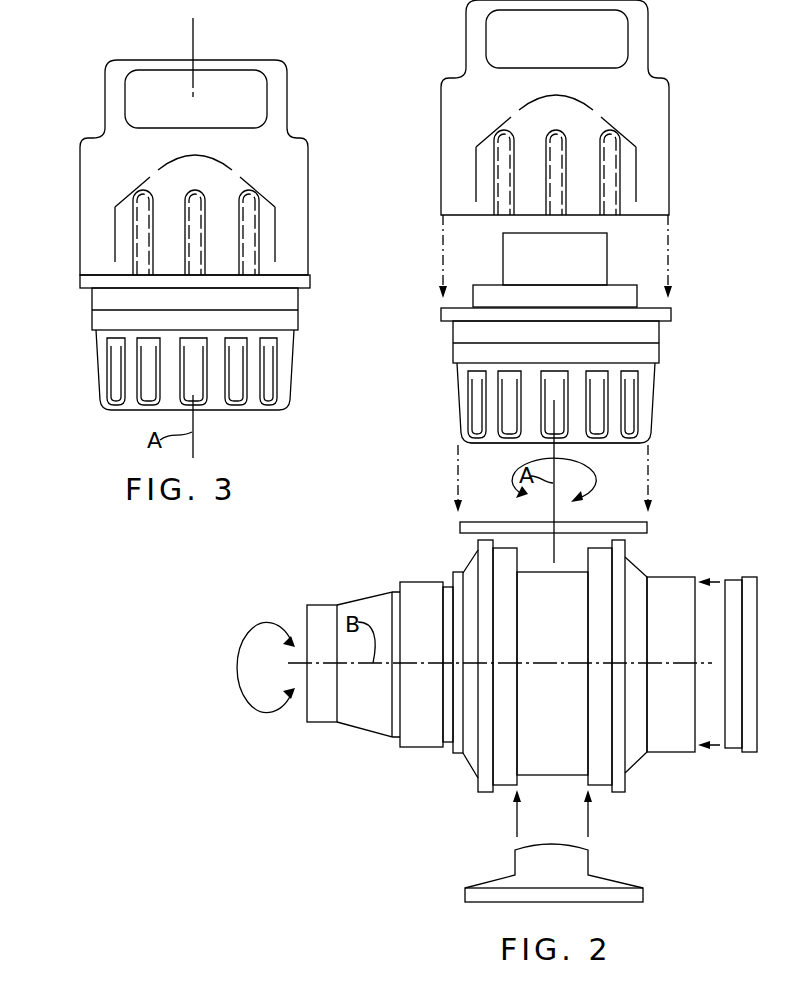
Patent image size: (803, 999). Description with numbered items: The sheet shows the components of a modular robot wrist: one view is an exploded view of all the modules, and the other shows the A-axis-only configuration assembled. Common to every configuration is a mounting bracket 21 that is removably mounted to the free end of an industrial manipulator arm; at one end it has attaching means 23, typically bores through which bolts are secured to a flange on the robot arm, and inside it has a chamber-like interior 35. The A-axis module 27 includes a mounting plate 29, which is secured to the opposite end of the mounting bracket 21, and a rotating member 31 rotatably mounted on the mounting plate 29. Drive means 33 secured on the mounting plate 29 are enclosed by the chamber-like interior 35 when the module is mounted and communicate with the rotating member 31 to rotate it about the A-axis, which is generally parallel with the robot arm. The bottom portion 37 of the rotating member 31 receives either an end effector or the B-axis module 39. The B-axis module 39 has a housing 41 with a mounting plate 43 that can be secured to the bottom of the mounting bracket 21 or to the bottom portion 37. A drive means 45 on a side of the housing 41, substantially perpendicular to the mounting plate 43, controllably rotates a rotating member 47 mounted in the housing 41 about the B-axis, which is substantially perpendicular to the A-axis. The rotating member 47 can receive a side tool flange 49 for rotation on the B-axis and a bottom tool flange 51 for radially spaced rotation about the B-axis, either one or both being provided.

In FIG. 3, the mounting bracket 21 is at (362, 195).
In FIG. 2, the mounting bracket 21 is at (674, 150).
In FIG. 3, the attaching means 23 is at (287, 84).
In FIG. 2, the attaching means 23 is at (648, 30).
In FIG. 3, the A-axis module 27 is at (94, 364).
In FIG. 2, the A-axis module 27 is at (656, 406).
In FIG. 3, the mounting plate 29 is at (306, 283).
In FIG. 2, the mounting plate 29 is at (443, 314).
In FIG. 3, the rotating member 31 is at (290, 392).
In FIG. 2, the rotating member 31 is at (457, 418).
In FIG. 2, the drive means 33 is at (613, 293).
In FIG. 2, the chamber-like interior 35 is at (527, 210).
In FIG. 2, the bottom portion 37 is at (488, 447).
In FIG. 2, the B-axis module 39 is at (646, 559).
In FIG. 2, the housing 41 is at (478, 548).
In FIG. 2, the mounting plate 43 is at (648, 528).
In FIG. 2, the drive means 45 is at (373, 718).
In FIG. 2, the rotating member 47 is at (517, 757).
In FIG. 2, the side tool flange 49 is at (747, 748).
In FIG. 2, the bottom tool flange 51 is at (602, 882).